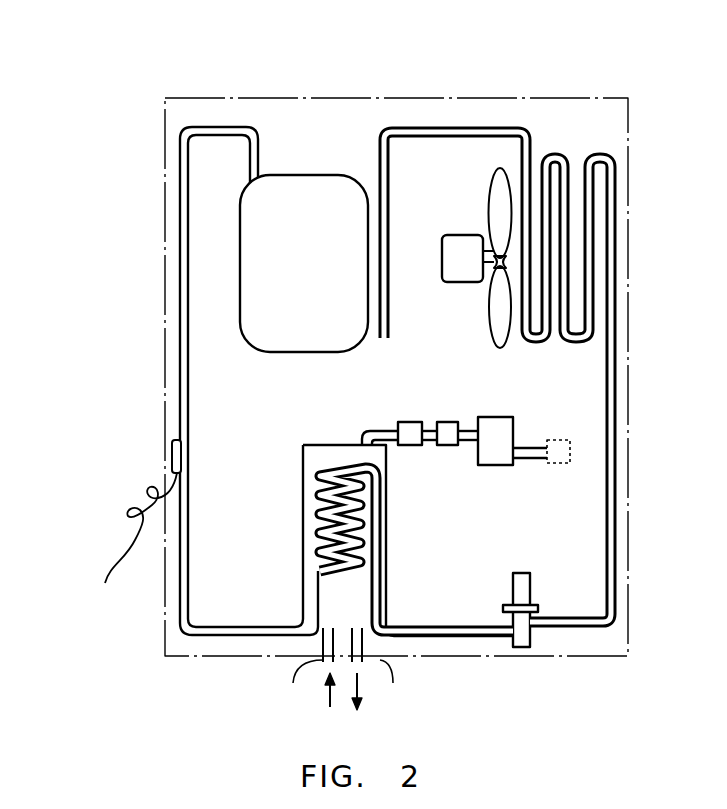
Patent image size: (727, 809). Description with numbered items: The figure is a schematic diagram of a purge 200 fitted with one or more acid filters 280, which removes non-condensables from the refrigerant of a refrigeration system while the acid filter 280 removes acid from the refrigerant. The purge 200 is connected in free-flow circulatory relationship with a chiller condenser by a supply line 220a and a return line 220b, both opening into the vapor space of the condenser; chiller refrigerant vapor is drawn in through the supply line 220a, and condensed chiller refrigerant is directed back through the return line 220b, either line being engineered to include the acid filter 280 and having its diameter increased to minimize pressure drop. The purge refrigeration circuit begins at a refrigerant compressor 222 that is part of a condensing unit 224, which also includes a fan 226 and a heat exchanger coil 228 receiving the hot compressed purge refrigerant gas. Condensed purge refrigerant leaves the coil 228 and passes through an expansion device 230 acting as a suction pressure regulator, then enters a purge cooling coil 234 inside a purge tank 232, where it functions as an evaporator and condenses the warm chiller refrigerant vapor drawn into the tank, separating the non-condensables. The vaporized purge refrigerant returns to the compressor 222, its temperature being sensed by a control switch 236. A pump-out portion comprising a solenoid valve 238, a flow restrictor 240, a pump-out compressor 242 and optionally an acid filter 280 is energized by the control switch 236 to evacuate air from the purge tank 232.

The purge 200 is at (327, 377).
The supply line 220a is at (295, 670).
The return line 220b is at (390, 669).
The refrigerant compressor 222 is at (302, 173).
The condensing unit 224 is at (504, 183).
The fan 226 is at (490, 205).
The heat exchanger coil 228 is at (617, 196).
The expansion device 230 is at (531, 590).
The purge tank 232 is at (387, 555).
The purge cooling coil 234 is at (312, 508).
The control switch 236 is at (172, 455).
The solenoid valve 238 is at (413, 422).
The flow restrictor 240 is at (447, 446).
The pump-out compressor 242 is at (503, 433).
The acid filter 280 is at (557, 467).